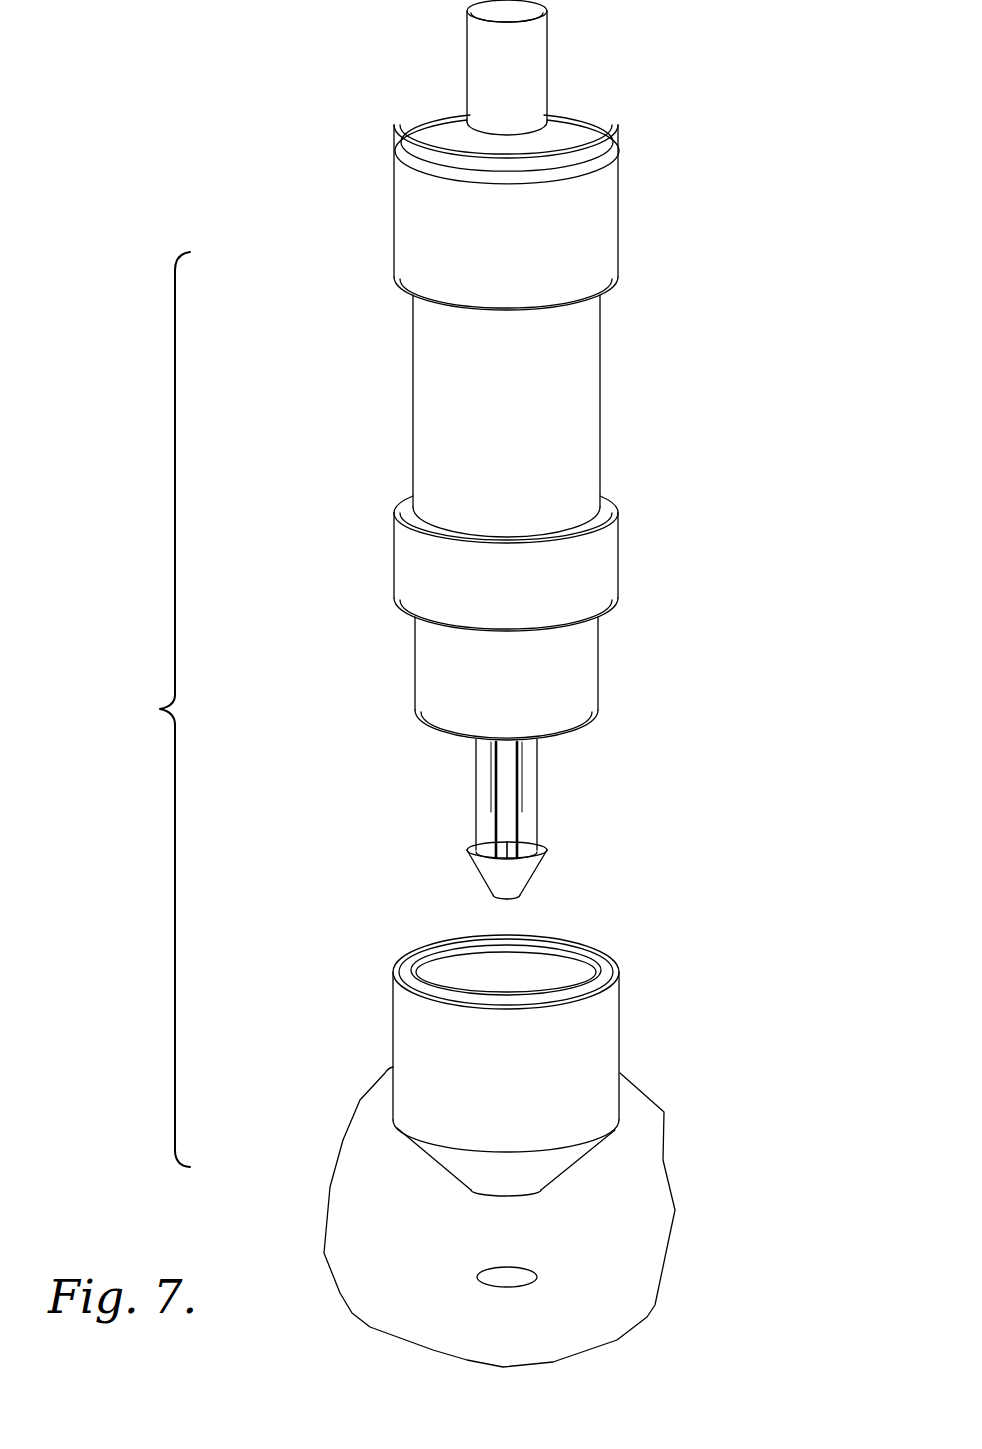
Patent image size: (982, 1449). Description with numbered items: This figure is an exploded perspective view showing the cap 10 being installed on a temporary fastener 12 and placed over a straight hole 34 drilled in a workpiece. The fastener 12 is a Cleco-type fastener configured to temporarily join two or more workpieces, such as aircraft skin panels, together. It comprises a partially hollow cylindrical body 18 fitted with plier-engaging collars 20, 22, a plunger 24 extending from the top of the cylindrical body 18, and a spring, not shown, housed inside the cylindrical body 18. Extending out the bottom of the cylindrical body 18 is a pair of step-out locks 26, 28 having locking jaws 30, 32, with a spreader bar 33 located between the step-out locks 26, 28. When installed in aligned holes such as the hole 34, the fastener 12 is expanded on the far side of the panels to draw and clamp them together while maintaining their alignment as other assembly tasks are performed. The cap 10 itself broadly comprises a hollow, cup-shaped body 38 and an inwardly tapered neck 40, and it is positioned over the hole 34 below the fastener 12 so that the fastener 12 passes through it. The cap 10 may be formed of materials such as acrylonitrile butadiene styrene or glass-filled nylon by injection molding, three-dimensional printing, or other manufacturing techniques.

The cap 10 is at (655, 980).
The temporary fastener 12 is at (634, 394).
The cylindrical body 18 is at (425, 409).
The plier-engaging collar 20 is at (400, 577).
The plier-engaging collar 22 is at (400, 205).
The plunger 24 is at (535, 48).
The step-out lock 26 is at (482, 805).
The step-out lock 28 is at (532, 817).
The locking jaw 30 is at (485, 873).
The locking jaw 32 is at (530, 868).
The spreader bar 33 is at (507, 858).
The hole 34 is at (535, 1273).
The cup-shaped body 38 is at (608, 1050).
The inwardly tapered neck 40 is at (472, 1170).